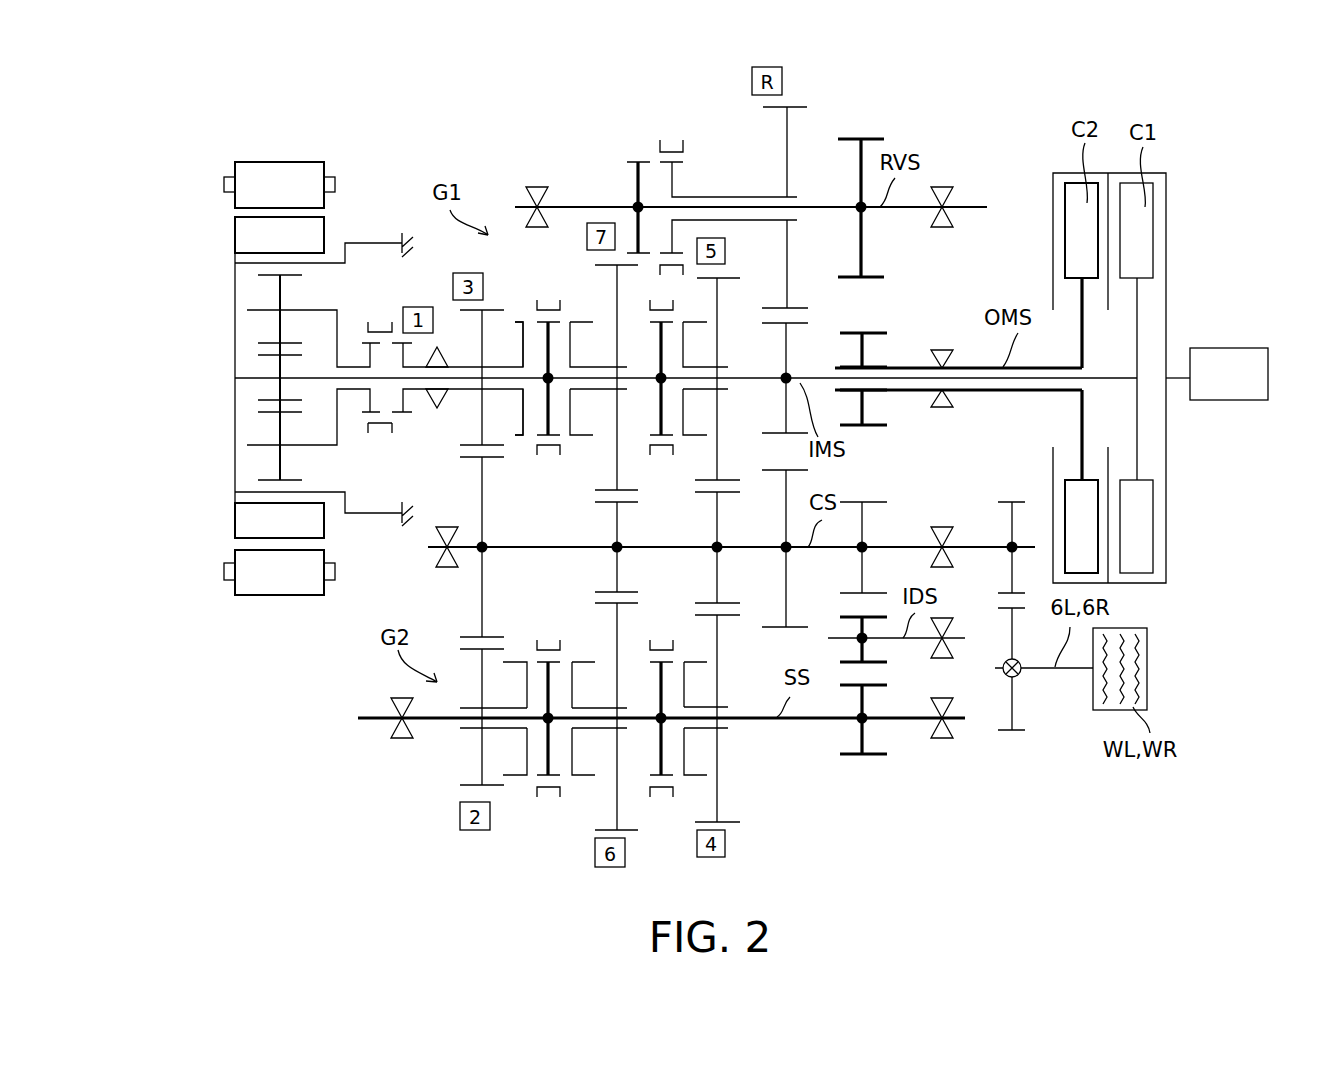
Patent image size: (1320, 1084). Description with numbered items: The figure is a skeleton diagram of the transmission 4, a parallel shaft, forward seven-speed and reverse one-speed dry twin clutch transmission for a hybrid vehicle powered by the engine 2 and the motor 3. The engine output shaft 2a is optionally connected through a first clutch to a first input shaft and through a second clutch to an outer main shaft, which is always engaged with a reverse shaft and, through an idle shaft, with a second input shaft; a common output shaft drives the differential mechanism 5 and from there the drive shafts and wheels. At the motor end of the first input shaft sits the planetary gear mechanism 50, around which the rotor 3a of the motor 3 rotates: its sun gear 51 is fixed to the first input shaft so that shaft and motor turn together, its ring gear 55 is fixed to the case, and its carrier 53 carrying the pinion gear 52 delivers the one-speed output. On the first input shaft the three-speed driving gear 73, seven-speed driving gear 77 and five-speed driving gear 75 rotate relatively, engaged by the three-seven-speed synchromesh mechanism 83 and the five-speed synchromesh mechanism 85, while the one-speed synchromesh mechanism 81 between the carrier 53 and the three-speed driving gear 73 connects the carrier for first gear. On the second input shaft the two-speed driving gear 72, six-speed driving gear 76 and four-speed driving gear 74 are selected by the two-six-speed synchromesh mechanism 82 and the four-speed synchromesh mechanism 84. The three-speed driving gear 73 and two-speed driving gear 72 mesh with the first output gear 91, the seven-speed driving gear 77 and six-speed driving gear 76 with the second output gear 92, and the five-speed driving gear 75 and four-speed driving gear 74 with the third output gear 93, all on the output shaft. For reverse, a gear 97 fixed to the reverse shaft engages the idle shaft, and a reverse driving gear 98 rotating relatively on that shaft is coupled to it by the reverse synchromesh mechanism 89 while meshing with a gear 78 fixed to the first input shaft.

The engine 2 is at (1230, 353).
The engine output shaft 2a is at (1182, 380).
The motor 3 is at (297, 155).
The rotor 3a is at (252, 232).
The transmission 4 is at (985, 123).
The differential mechanism 5 is at (1020, 677).
The planetary gear mechanism 50 is at (352, 443).
The sun gear 51 is at (280, 366).
The pinion gear 52 is at (280, 295).
The carrier 53 is at (337, 318).
The ring gear 55 is at (317, 263).
The 2-speed driving gear 72 is at (495, 785).
The 3-speed driving gear 73 is at (483, 310).
The 4-speed driving gear 74 is at (722, 820).
The 5-speed driving gear 75 is at (725, 276).
The 6-speed driving gear 76 is at (625, 830).
The 7-speed driving gear 77 is at (597, 265).
The gear 78 is at (785, 355).
The 1-speed synchromesh mechanism 81 is at (373, 332).
The 2-6-speed synchromesh mechanism 82 is at (550, 647).
The 3-7-speed synchromesh mechanism 83 is at (560, 307).
The 4-speed synchromesh mechanism 84 is at (652, 647).
The 5-speed synchromesh mechanism 85 is at (673, 308).
The reverse synchromesh mechanism 89 is at (672, 150).
The first output gear 91 is at (488, 460).
The second output gear 92 is at (623, 503).
The third output gear 93 is at (713, 507).
The gear 97 is at (865, 138).
The reverse driving gear 98 is at (785, 172).